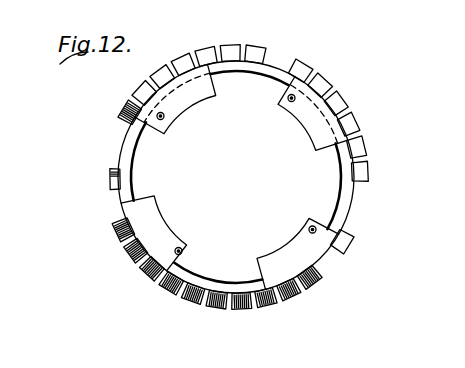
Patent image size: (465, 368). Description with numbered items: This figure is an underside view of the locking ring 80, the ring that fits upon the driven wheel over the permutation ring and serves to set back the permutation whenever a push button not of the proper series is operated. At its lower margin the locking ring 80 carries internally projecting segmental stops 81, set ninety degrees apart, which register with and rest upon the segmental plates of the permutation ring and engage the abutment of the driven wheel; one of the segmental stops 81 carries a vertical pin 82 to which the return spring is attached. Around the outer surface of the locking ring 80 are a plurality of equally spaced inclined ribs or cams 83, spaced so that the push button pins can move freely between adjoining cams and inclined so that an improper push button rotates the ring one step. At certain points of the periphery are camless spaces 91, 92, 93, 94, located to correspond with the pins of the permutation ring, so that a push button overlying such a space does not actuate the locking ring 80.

The locking ring 80 is at (118, 111).
The segmental stops 81 is at (163, 135).
The vertical pin 82 is at (288, 103).
The inclined ribs or cams 83 is at (186, 60).
The camless space 91 is at (296, 66).
The camless space 92 is at (357, 203).
The camless space 93 is at (119, 208).
The camless space 94 is at (112, 152).